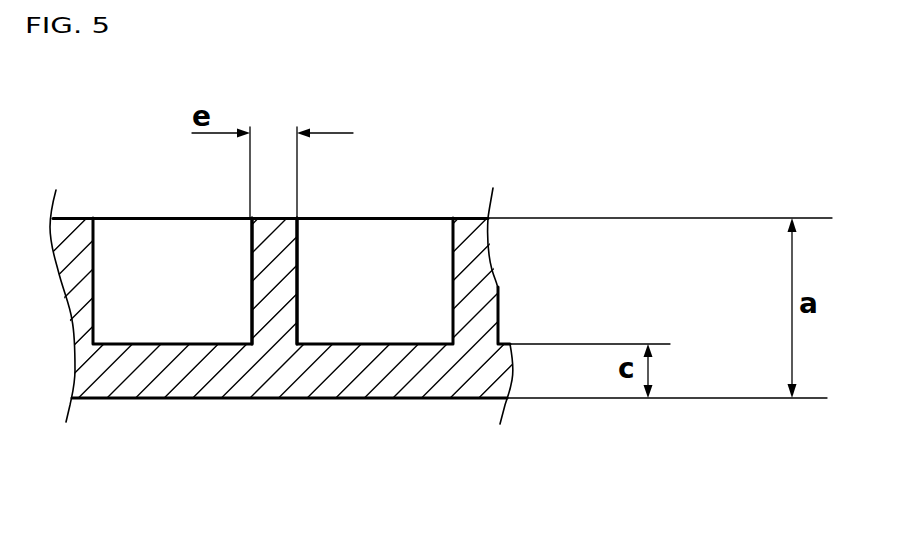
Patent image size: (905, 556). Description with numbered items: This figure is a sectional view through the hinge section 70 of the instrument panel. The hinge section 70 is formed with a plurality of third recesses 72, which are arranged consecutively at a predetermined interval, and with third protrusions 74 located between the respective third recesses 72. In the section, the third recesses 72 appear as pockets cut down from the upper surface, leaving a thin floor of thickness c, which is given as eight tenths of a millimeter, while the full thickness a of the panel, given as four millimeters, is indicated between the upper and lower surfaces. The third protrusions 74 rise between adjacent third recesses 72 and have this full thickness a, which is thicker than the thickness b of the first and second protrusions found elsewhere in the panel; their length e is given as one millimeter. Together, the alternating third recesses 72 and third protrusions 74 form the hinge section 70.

The hinge section 70 is at (444, 201).
The third recesses 72 is at (348, 344).
The third protrusions 74 is at (268, 216).